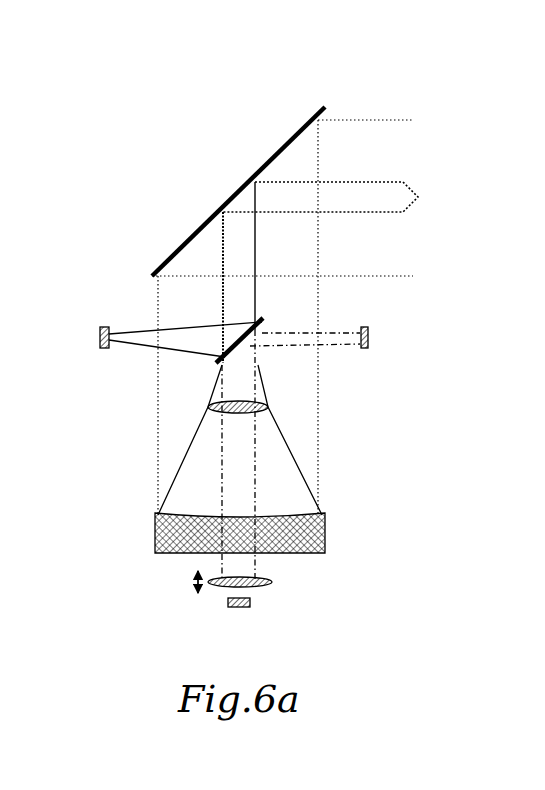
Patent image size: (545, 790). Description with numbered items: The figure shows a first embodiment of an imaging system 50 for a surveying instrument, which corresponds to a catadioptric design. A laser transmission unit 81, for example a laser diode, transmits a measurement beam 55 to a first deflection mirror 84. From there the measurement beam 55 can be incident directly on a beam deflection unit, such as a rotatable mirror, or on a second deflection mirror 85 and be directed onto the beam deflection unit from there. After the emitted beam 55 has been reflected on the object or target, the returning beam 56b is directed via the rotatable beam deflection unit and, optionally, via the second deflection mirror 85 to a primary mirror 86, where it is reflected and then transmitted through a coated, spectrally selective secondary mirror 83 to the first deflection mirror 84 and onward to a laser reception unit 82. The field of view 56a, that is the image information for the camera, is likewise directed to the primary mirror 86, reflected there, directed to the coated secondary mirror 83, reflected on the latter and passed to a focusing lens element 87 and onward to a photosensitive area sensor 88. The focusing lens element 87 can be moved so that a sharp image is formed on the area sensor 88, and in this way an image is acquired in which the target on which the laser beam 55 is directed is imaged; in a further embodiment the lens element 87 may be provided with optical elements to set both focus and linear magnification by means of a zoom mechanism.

The imaging system 50 is at (196, 116).
The measurement beam 55 is at (373, 213).
The field of view 56a is at (370, 121).
The reflected beam 56b is at (325, 120).
The laser transmission unit 81 is at (103, 348).
The laser reception unit 82 is at (365, 349).
The secondary mirror 83 is at (268, 407).
The first deflection mirror 84 is at (255, 328).
The second deflection mirror 85 is at (217, 212).
The primary mirror 86 is at (310, 543).
The focusing lens element 87 is at (258, 586).
The photosensitive area sensor 88 is at (230, 604).